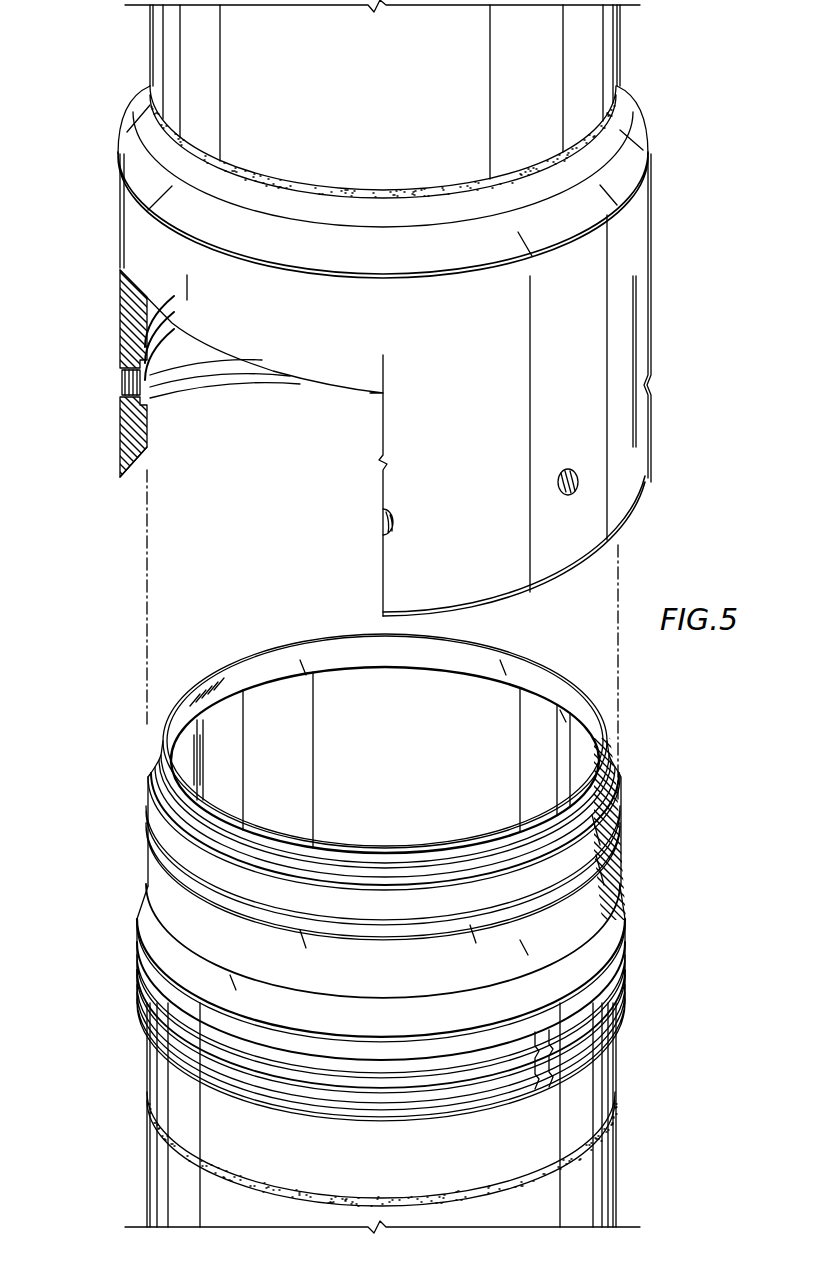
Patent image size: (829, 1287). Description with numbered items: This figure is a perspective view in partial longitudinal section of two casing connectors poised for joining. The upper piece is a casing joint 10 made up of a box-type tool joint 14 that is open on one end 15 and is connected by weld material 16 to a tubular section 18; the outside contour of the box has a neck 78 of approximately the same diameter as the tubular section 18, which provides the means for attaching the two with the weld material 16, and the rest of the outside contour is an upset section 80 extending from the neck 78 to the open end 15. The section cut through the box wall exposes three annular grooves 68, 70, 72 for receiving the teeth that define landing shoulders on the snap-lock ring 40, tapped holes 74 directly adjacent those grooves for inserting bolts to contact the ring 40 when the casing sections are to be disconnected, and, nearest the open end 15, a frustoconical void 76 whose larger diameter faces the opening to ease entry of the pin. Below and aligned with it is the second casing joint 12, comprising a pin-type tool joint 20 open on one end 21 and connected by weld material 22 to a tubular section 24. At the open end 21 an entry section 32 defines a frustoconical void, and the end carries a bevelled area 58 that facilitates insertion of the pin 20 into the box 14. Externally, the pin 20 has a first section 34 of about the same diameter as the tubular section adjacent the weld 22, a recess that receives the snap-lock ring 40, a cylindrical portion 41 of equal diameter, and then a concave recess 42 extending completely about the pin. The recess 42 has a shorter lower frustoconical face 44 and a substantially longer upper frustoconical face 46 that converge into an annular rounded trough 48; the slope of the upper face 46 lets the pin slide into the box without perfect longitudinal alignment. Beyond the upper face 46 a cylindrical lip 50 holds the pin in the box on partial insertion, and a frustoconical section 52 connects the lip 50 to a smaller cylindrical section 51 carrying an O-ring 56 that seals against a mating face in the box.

The casing joint 10 is at (680, 315).
The second casing joint 12 is at (694, 907).
The box-type tool joint 14 is at (628, 250).
The open end of box 15 is at (540, 588).
The weld material 16 is at (600, 150).
The tubular section 18 is at (623, 35).
The pin-type tool joint 20 is at (590, 1085).
The open end of pin 21 is at (280, 655).
The weld material 22 is at (187, 1153).
The tubular section 24 is at (617, 1184).
The entry section 32 is at (567, 713).
The first section 34 is at (143, 1073).
The snap-lock ring 40 is at (137, 985).
The cylindrical portion 41 is at (138, 953).
The recess 42 is at (108, 890).
The lower face 44 is at (400, 1034).
The upper face 46 is at (406, 979).
The annular rounded trough 48 is at (626, 952).
The cylindrical lip 50 is at (597, 867).
The cylindrical section 51 is at (593, 830).
The frustoconical section 52 is at (160, 827).
The O-ring 56 is at (157, 782).
The bevelled area 58 is at (163, 748).
The annular groove 68 is at (210, 345).
The annular groove 70 is at (187, 362).
The annular groove 72 is at (166, 390).
The tapped holes 74 is at (578, 482).
The frustoconical void 76 is at (136, 478).
The neck 78 is at (340, 212).
The upset section 80 is at (120, 198).